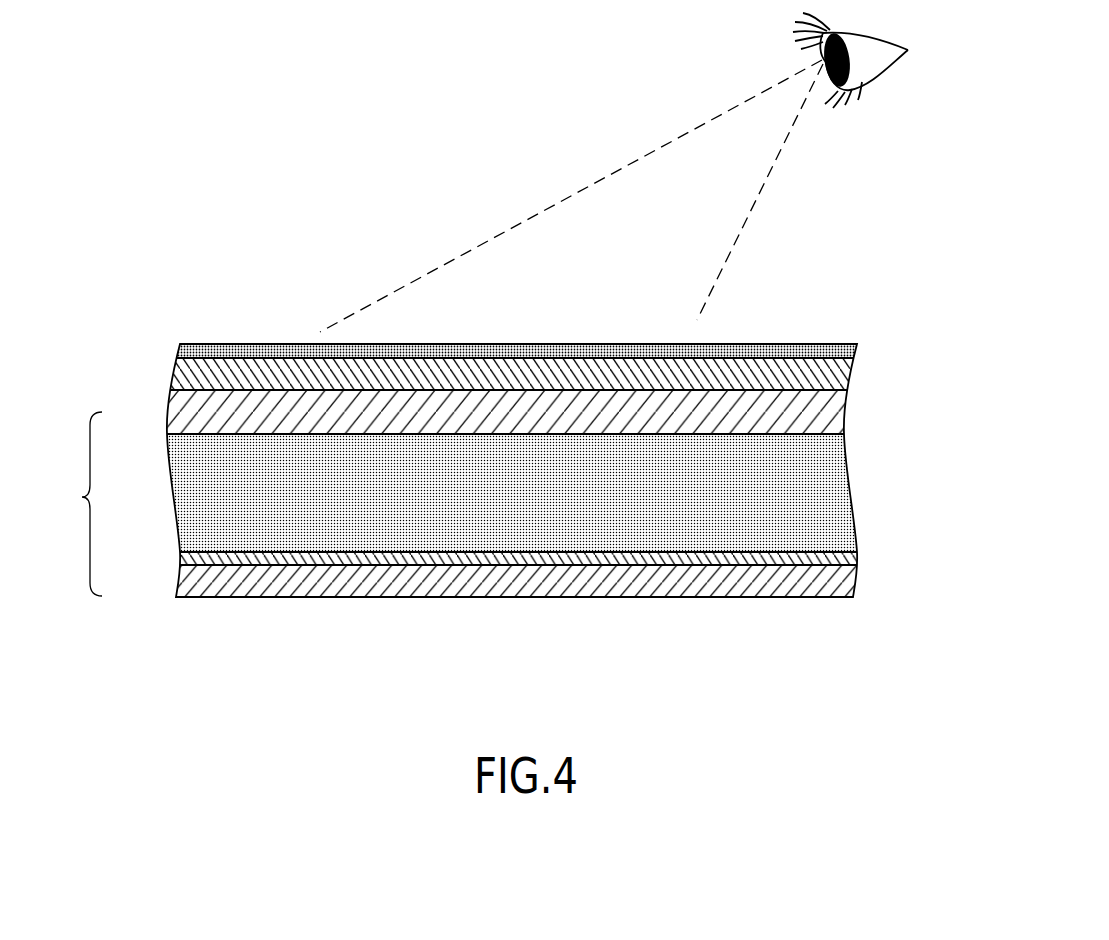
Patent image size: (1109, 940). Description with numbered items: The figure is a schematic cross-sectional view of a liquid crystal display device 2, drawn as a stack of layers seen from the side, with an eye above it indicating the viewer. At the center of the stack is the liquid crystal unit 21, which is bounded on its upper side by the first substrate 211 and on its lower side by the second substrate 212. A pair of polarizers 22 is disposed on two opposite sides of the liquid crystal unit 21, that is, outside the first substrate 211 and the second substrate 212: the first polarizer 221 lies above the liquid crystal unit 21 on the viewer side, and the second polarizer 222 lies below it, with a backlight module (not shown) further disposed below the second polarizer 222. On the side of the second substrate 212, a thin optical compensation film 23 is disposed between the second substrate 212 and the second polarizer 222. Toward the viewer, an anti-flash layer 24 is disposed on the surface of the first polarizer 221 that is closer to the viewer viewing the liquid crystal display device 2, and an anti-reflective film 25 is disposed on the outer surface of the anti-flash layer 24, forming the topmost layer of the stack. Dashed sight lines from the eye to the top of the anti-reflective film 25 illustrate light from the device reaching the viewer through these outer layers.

The liquid crystal display device 2 is at (273, 258).
The liquid crystal unit 21 is at (830, 490).
The first substrate 211 is at (820, 435).
The second substrate 212 is at (830, 550).
The pair of polarizers 22 is at (80, 504).
The first polarizer 221 is at (169, 413).
The second polarizer 222 is at (177, 588).
The optical compensation film 23 is at (853, 558).
The anti-flash layer 24 is at (854, 378).
The anti-reflective film 25 is at (857, 352).